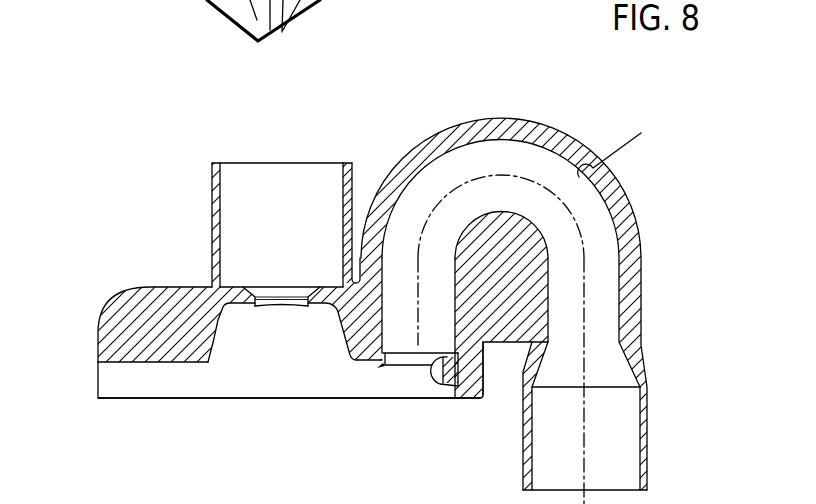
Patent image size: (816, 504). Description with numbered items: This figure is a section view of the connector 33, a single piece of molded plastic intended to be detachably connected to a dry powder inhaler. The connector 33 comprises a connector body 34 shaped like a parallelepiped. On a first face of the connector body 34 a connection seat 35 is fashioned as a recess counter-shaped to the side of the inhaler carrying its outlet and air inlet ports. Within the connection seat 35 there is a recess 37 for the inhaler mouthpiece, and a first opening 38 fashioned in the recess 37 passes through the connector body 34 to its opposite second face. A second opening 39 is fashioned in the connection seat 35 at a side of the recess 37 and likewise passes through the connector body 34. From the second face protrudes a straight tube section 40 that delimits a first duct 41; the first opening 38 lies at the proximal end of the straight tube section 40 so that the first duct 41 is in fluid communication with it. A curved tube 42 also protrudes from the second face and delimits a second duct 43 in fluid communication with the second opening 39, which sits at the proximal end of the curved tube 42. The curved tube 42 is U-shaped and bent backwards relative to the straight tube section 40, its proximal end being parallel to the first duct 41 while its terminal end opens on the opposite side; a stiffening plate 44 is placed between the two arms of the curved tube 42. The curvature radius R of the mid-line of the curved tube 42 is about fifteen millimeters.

The connector 33 is at (217, 439).
The connector body 34 is at (101, 287).
The connection seat 35 is at (200, 4).
The recess 37 is at (346, 301).
The first opening 38 is at (262, 287).
The second opening 39 is at (432, 384).
The straight tube section 40 is at (212, 222).
The first duct 41 is at (343, 205).
The curved tube 42 is at (495, 118).
The second duct 43 is at (622, 144).
The stiffening plate 44 is at (548, 242).
The curvature radius R is at (500, 258).